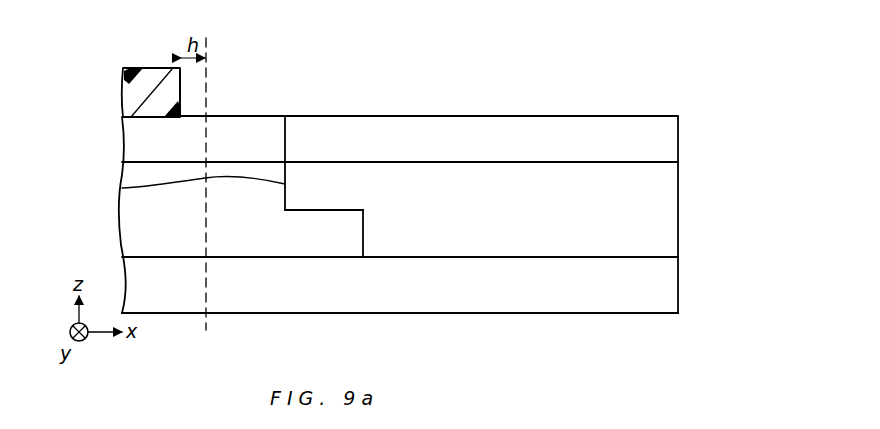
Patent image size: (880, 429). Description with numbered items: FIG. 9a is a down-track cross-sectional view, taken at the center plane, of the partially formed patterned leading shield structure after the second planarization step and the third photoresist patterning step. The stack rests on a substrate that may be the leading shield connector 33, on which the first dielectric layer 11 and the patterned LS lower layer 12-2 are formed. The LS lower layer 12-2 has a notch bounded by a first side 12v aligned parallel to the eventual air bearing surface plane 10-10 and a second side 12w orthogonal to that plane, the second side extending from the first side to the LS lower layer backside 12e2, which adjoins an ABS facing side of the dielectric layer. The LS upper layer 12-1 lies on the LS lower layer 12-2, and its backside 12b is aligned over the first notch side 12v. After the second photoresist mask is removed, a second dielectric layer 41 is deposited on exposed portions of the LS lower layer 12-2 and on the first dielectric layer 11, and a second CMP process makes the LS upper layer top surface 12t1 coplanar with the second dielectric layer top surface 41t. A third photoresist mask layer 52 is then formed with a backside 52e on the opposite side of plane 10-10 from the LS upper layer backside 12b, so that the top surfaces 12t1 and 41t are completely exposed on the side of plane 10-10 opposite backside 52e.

The plane of the eventual air bearing surface 10 is at (200, 184).
The third photoresist mask layer 52 is at (132, 97).
The backside of third photoresist mask layer 52e is at (183, 85).
The LS upper layer top surface 12t1 is at (222, 116).
The LS upper layer backside 12b is at (285, 135).
The second dielectric layer top surface 41t is at (466, 114).
The second dielectric layer 41 is at (668, 138).
The first dielectric layer 11 is at (668, 193).
The leading shield connector 33 is at (668, 293).
The LS upper layer 12-1 is at (137, 141).
The first side of notch 12v is at (135, 188).
The LS lower layer 12-2 is at (137, 203).
The second side of notch 12w is at (311, 210).
The LS lower layer backside 12e2 is at (363, 232).